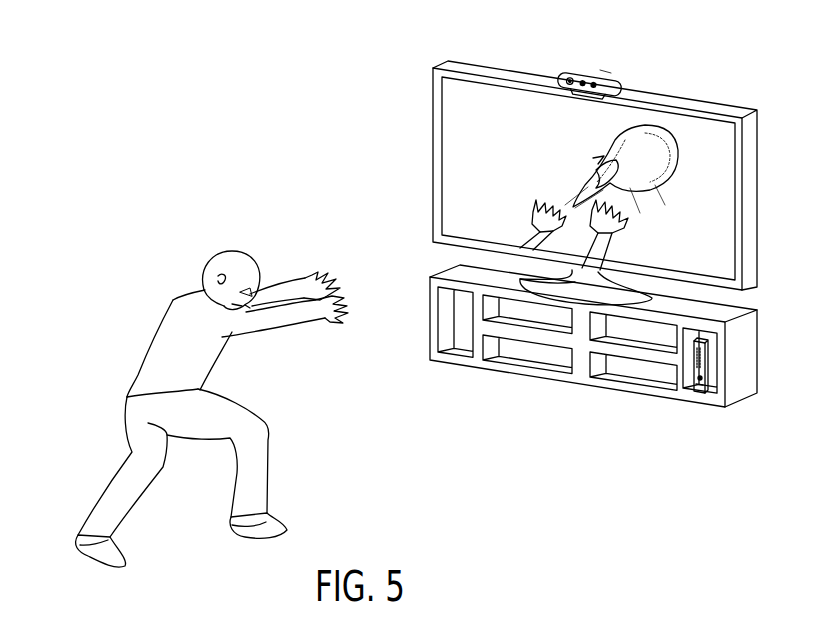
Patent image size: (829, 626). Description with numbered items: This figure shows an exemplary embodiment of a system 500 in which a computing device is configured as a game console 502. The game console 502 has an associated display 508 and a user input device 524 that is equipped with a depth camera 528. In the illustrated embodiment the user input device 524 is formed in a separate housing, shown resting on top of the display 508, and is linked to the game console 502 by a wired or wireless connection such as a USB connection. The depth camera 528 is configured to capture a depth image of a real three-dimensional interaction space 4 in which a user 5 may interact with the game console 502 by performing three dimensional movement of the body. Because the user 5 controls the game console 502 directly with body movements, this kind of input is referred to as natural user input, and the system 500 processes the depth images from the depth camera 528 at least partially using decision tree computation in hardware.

The system 500 is at (119, 202).
The real 3D interaction space 4 is at (408, 456).
The user 5 is at (256, 255).
The game console 502 is at (717, 390).
The display 508 is at (723, 269).
The user input device 524 is at (597, 70).
The depth camera 528 is at (582, 72).